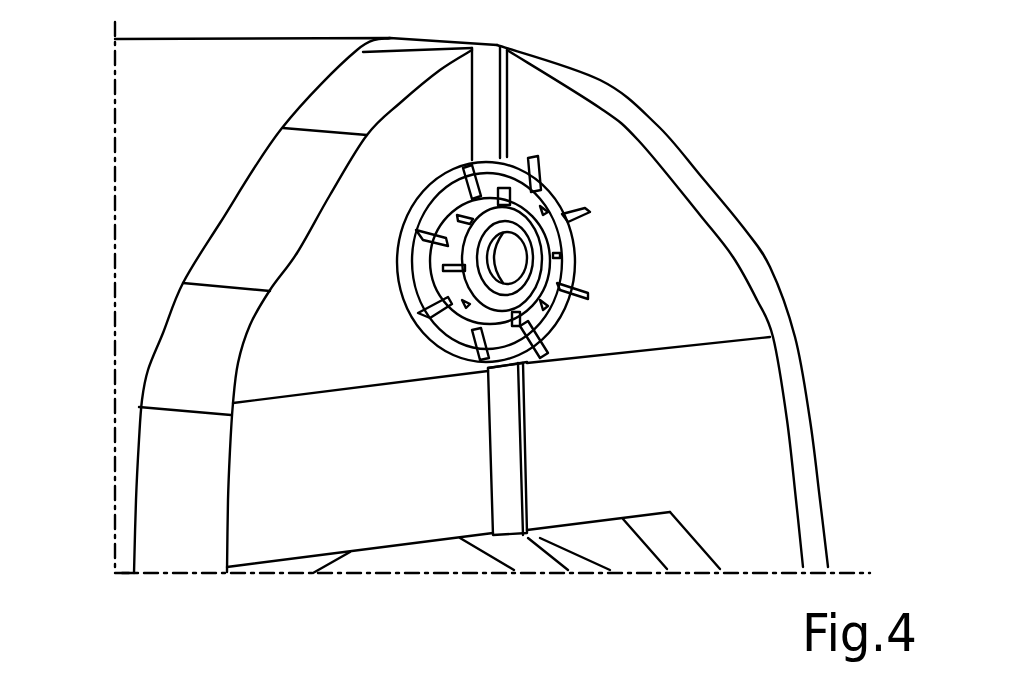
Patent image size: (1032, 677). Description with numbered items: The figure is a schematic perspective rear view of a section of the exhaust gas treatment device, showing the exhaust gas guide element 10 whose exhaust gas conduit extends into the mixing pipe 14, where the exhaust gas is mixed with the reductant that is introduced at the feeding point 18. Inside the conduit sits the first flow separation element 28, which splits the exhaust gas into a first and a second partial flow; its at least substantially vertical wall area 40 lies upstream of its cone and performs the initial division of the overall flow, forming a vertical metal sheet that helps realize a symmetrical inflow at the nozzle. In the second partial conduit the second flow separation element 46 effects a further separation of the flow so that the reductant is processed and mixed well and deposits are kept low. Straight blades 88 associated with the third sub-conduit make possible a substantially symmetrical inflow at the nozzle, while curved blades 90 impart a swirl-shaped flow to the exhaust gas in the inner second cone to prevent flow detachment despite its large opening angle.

The exhaust gas guide element 10 is at (705, 188).
The mixing pipe 14 is at (142, 70).
The feeding point 18 is at (528, 237).
The first flow separation element 28 is at (565, 320).
The wall area 40 is at (510, 100).
The second flow separation element 46 is at (578, 270).
The straight blades 88 is at (462, 163).
The curved blades 90 is at (443, 268).